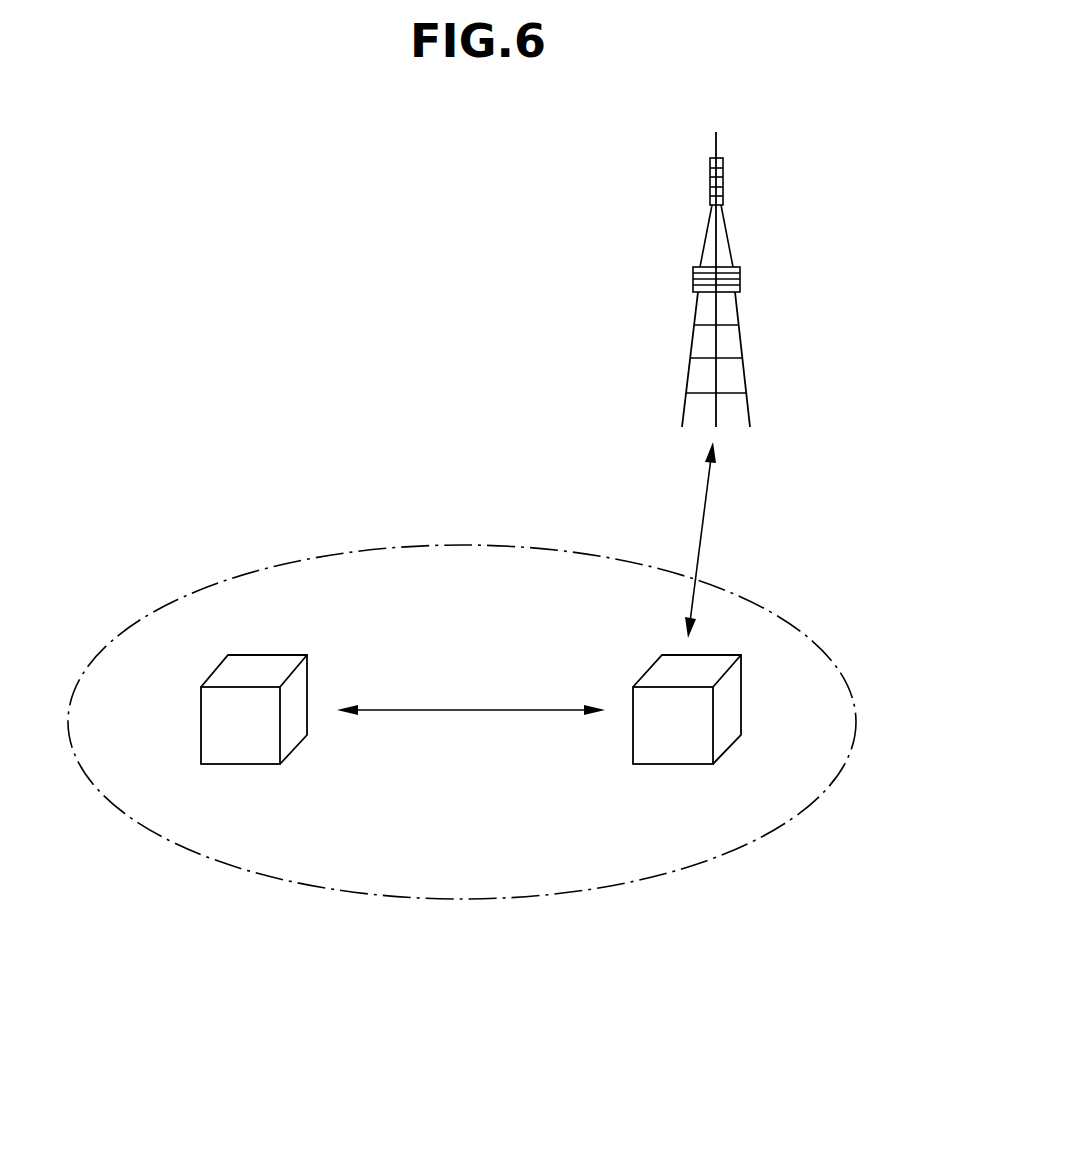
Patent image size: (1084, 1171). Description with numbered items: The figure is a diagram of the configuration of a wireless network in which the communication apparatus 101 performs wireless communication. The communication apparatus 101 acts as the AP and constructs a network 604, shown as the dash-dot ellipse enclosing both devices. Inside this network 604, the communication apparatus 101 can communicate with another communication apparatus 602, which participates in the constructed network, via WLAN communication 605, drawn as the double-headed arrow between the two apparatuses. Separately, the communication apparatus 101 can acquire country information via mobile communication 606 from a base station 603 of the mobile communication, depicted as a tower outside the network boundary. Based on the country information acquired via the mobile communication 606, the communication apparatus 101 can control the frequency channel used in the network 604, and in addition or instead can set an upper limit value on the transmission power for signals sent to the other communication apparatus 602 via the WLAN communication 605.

The communication apparatus 101 is at (672, 790).
The another communication apparatus 602 is at (240, 790).
The base station 603 is at (755, 155).
The network 604 is at (452, 545).
The WLAN communication 605 is at (478, 708).
The mobile communication 606 is at (705, 512).